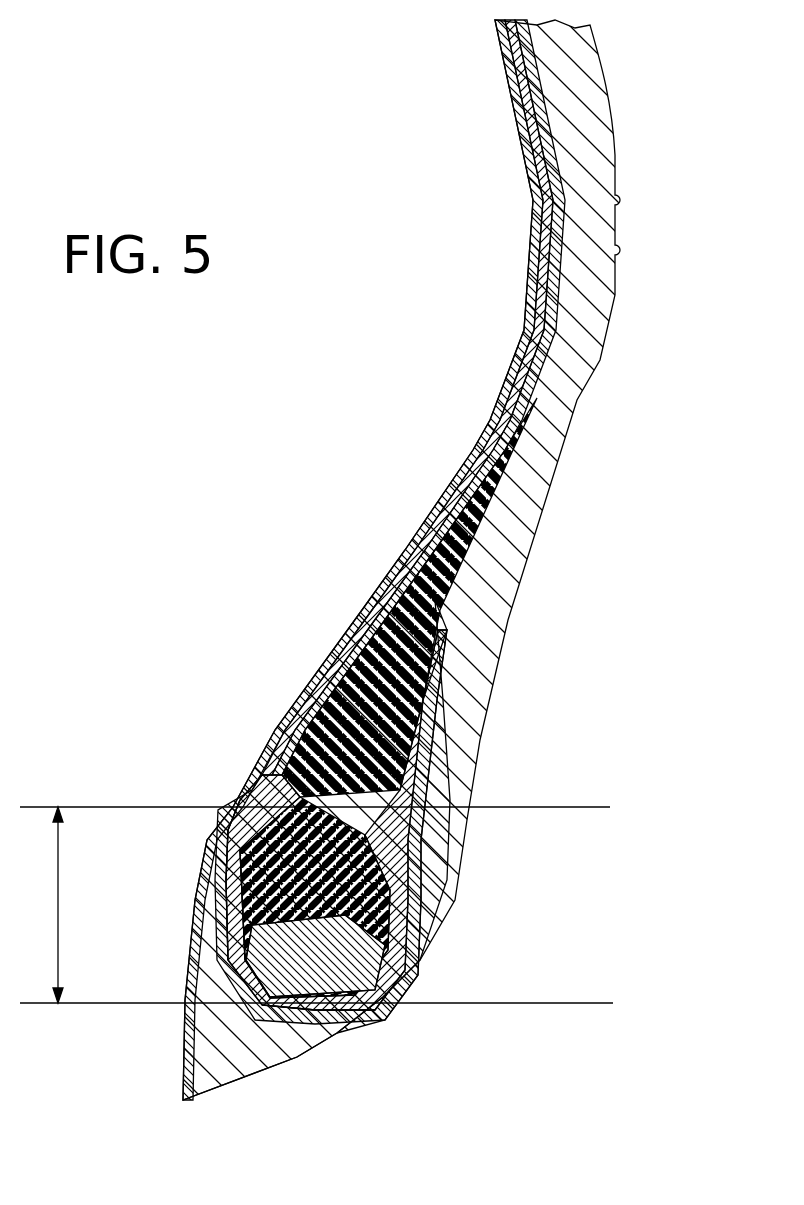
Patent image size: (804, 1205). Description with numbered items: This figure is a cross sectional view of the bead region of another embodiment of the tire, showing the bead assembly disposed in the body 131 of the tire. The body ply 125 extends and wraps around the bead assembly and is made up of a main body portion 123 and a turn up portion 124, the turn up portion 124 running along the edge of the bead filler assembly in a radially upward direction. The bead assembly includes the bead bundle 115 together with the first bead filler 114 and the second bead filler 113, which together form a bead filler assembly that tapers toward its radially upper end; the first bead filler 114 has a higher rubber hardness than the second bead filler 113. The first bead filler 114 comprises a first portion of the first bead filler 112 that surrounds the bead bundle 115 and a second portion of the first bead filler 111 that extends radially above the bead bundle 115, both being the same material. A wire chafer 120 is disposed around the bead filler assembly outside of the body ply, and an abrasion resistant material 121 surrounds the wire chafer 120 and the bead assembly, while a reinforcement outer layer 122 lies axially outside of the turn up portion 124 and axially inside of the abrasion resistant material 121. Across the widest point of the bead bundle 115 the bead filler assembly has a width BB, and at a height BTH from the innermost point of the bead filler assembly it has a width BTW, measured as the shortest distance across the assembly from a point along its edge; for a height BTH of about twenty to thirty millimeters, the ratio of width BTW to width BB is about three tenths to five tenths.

The second portion of the first bead filler 111 is at (278, 727).
The first portion of the first bead filler 112 is at (240, 930).
The second bead filler 113 is at (370, 622).
The first bead filler 114 is at (240, 886).
The bead bundle 115 is at (405, 915).
The wire chafer 120 is at (293, 1017).
The abrasion resistant material 121 is at (421, 810).
The reinforcement outer layer 122 is at (400, 743).
The main body portion 123 is at (322, 680).
The turn up portion 124 is at (410, 700).
The body ply 125 is at (538, 372).
The body 131 is at (575, 350).
The width BB is at (380, 960).
The width BTW is at (243, 792).
The height BTH is at (316, 905).